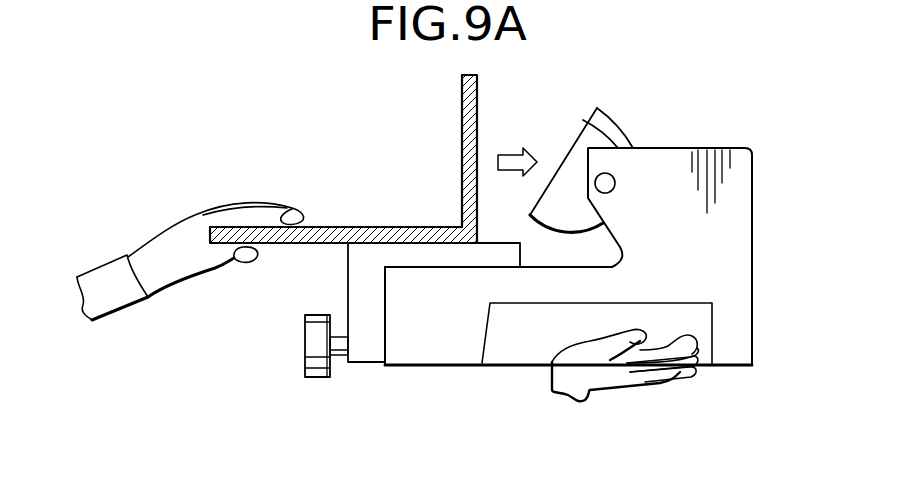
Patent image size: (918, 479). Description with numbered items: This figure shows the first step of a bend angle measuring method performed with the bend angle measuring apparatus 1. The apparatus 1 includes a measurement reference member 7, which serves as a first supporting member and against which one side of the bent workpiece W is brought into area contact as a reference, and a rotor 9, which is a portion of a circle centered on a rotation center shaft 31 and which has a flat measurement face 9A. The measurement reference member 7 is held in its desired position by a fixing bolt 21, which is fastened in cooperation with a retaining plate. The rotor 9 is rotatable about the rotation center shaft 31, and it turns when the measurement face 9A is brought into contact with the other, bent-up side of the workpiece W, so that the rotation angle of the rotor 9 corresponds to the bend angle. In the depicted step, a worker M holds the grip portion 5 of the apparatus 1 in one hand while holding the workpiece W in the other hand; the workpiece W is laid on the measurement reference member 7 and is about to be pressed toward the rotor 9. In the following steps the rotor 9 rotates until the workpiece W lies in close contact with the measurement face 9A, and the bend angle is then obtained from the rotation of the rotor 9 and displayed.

The bend angle measuring apparatus 1 is at (776, 201).
The grip portion 5 is at (698, 322).
The measurement reference member 7 is at (348, 272).
The rotor 9 is at (612, 128).
The measurement face 9A is at (585, 120).
The fixing bolt 21 is at (305, 347).
The rotation center shaft 31 is at (615, 183).
The workpiece W is at (477, 93).
The worker M is at (617, 395).